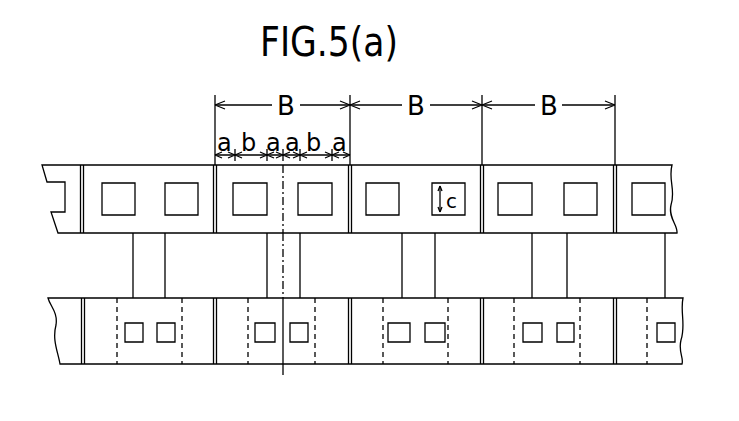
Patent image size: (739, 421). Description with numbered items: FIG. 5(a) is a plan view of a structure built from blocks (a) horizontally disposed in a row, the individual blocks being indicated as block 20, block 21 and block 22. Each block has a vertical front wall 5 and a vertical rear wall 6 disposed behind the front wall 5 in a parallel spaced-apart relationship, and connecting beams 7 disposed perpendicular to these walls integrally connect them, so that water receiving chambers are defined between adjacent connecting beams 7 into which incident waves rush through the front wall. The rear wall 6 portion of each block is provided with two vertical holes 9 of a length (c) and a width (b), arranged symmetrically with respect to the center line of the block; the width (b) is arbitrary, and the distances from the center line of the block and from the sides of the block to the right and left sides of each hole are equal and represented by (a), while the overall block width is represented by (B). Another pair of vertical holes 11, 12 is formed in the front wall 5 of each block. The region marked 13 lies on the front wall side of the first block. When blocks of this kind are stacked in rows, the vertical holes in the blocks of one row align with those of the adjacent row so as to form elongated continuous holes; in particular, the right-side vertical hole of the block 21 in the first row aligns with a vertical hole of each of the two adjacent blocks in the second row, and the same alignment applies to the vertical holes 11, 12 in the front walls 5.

The vertical front wall 5 is at (125, 363).
The vertical rear wall 6 is at (91, 172).
The connecting beam 7 is at (163, 248).
The vertical hole 9 is at (122, 189).
The vertical hole 11 is at (127, 334).
The vertical hole 12 is at (162, 328).
The plate section 13 is at (119, 266).
The block 20 is at (170, 364).
The block 21 is at (298, 364).
The block 22 is at (422, 364).